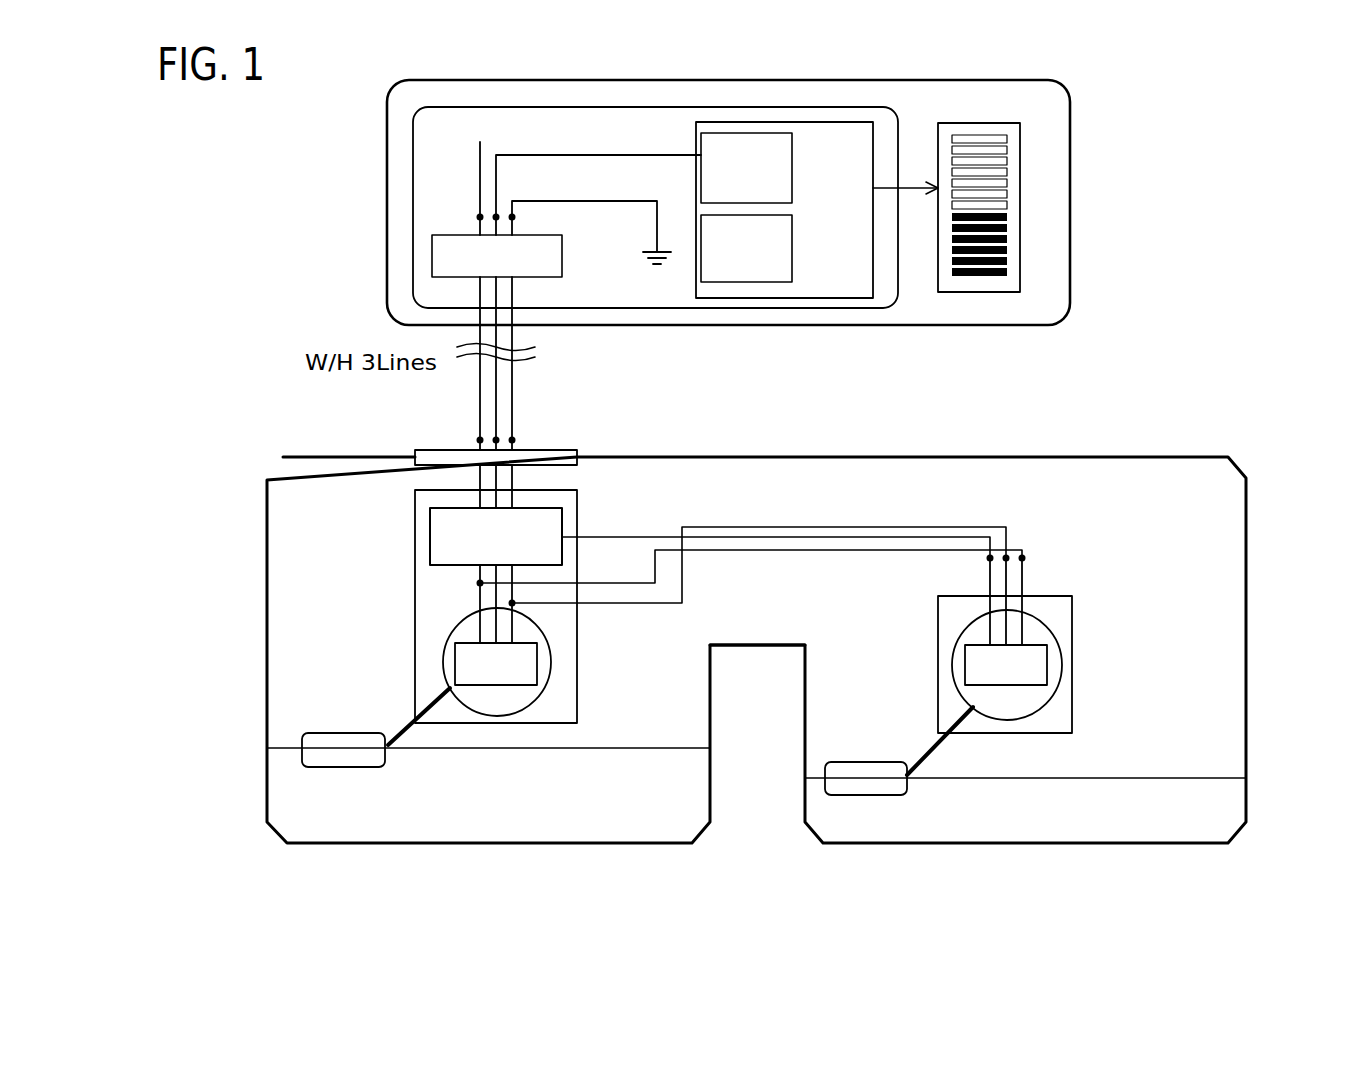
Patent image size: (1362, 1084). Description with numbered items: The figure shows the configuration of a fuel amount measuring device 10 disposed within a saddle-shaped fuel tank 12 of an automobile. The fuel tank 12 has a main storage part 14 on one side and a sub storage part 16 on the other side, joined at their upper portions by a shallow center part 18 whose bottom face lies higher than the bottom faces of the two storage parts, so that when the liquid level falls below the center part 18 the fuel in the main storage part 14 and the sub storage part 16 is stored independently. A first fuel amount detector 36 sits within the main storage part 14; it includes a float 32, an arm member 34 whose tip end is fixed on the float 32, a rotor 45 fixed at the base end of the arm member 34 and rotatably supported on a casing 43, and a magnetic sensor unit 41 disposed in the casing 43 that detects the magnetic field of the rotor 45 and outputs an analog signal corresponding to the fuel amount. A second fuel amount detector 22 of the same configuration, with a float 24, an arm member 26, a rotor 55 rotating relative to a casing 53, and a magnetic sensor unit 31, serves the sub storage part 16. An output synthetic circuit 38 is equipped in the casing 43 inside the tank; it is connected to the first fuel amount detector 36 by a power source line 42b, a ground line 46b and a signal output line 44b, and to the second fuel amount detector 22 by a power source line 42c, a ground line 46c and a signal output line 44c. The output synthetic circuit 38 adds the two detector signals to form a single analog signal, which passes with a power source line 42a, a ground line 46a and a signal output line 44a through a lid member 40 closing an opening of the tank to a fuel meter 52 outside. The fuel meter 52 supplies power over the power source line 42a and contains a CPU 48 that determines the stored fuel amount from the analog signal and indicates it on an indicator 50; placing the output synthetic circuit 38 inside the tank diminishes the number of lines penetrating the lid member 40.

The fuel amount measuring device 10 is at (665, 508).
The fuel tank 12 is at (1209, 457).
The main storage part 14 is at (283, 706).
The sub storage part 16 is at (1231, 685).
The center part 18 is at (760, 645).
The second fuel amount detector 22 is at (1033, 654).
The float 24 is at (860, 785).
The arm member 26 is at (937, 753).
The magnetic sensor unit 31 is at (1017, 690).
The float 32 is at (332, 753).
The arm member 34 is at (403, 730).
The first fuel amount detector 36 is at (606, 690).
The output synthetic circuit 38 is at (430, 523).
The lid member 40 is at (572, 455).
The magnetic sensor unit 41 is at (508, 690).
The power source line 42a is at (479, 408).
The power source line 42b is at (480, 596).
The power source line 42c is at (810, 549).
The casing 43 is at (557, 702).
The signal output line 44a is at (497, 378).
The signal output line 44b is at (478, 577).
The signal output line 44c is at (865, 537).
The rotor 45 is at (363, 737).
The ground line 46a is at (513, 408).
The ground line 46b is at (513, 592).
The ground line 46c is at (752, 527).
The CPU 48 is at (828, 280).
The indicator 50 is at (1010, 186).
The fuel meter 52 is at (1075, 225).
The casing 53 is at (1047, 712).
The rotor 55 is at (1145, 739).